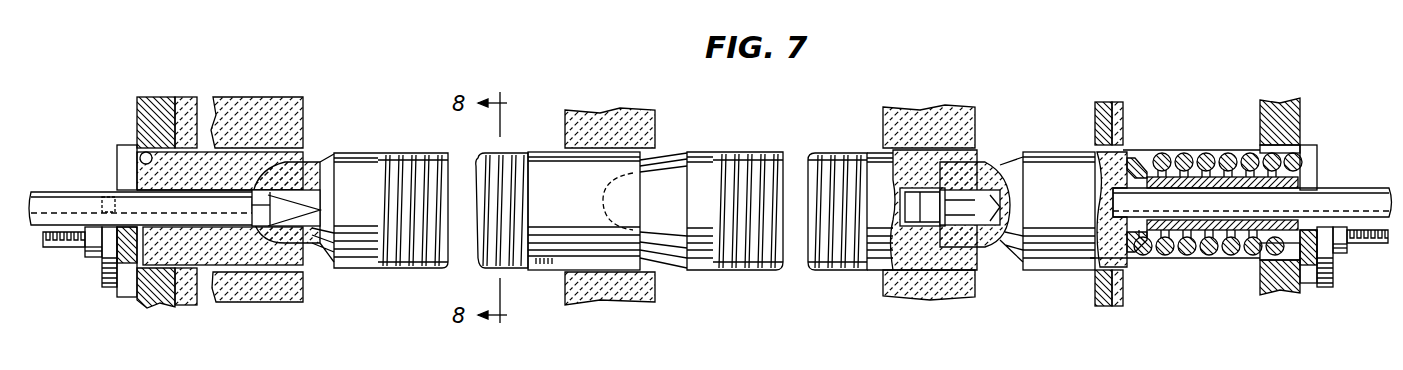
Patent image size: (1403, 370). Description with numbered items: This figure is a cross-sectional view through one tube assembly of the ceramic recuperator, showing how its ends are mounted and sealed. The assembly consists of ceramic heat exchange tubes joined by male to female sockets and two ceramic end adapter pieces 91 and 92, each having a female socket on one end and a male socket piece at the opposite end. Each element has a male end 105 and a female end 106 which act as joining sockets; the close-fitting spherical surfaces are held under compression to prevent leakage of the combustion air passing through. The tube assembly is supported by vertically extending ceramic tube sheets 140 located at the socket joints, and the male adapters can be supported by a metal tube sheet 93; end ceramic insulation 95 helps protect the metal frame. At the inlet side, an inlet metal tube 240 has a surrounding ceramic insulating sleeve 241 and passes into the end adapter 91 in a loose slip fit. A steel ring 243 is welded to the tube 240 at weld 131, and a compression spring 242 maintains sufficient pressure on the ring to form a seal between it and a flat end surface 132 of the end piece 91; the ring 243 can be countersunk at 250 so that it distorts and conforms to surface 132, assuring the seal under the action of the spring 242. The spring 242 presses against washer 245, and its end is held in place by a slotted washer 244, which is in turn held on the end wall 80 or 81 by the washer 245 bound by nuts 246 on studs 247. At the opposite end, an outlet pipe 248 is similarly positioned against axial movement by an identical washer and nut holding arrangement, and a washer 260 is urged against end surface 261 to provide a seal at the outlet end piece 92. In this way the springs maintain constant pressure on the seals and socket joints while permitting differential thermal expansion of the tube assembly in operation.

The end wall 80 is at (1278, 294).
The end wall 81 is at (153, 301).
The end adapter 91 is at (1008, 248).
The end adapter 92 is at (240, 232).
The metal tube sheet 93 is at (1118, 308).
The end ceramic insulation 95 is at (185, 298).
The male end 105 is at (607, 232).
The female end 106 is at (968, 162).
The weld 131 is at (1153, 177).
The flat end surface 132 is at (1098, 152).
The ceramic tube sheet 140 is at (270, 97).
The inlet metal tube 240 is at (1362, 197).
The ceramic insulating sleeve 241 is at (947, 264).
The compression spring 242 is at (1213, 257).
The steel ring 243 is at (1143, 157).
The slotted washer 244 is at (117, 170).
The washer 245 is at (108, 288).
The nut 246 is at (93, 253).
The stud 247 is at (67, 248).
The outlet pipe 248 is at (80, 192).
The countersink 250 is at (1125, 264).
The washer 260 is at (137, 156).
The end surface 261 is at (146, 152).